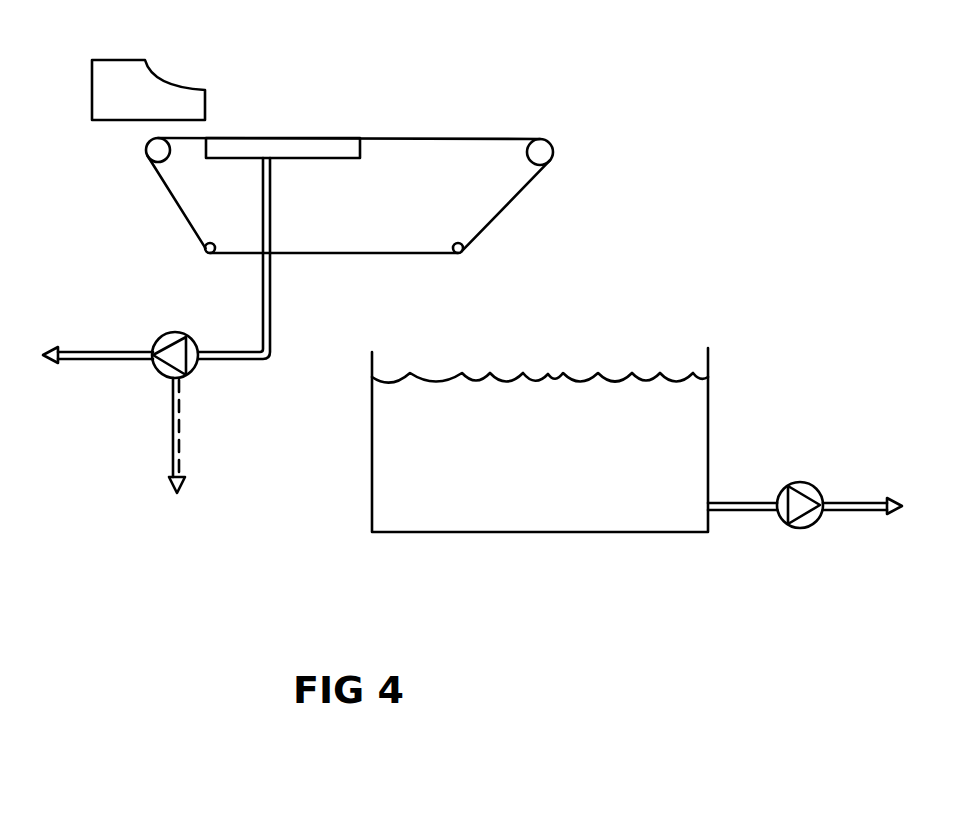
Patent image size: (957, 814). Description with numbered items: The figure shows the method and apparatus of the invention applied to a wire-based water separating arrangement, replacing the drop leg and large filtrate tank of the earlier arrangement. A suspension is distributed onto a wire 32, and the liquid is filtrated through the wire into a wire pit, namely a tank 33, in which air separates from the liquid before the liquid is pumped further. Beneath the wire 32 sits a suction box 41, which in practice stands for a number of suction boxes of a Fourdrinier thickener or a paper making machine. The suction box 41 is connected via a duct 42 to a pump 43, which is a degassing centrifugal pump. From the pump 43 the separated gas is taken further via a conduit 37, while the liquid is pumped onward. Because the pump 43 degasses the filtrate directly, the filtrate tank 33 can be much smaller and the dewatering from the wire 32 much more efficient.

The wire 32 is at (420, 153).
The tank 33 is at (550, 377).
The conduit 37 is at (180, 443).
The suction box 41 is at (310, 142).
The duct 42 is at (270, 277).
The pump 43 is at (162, 338).